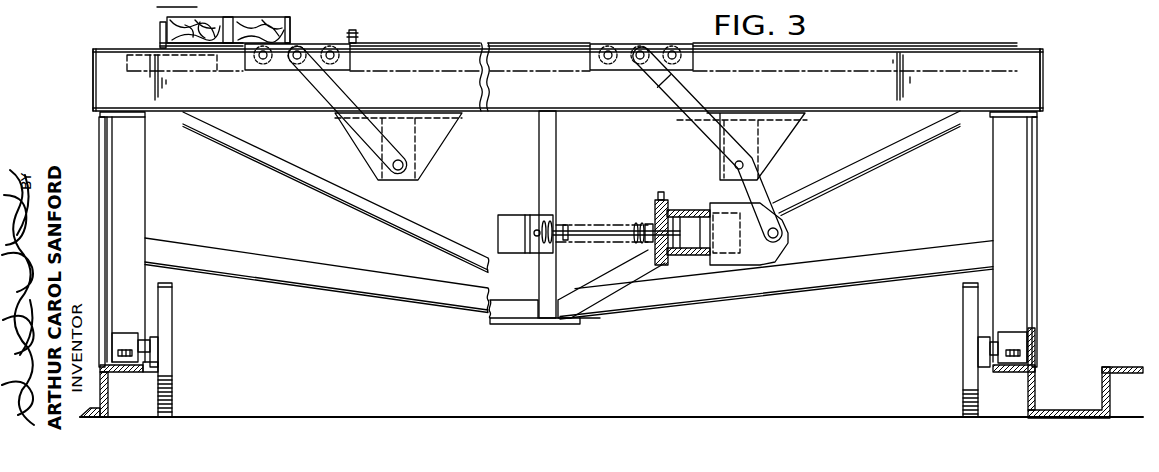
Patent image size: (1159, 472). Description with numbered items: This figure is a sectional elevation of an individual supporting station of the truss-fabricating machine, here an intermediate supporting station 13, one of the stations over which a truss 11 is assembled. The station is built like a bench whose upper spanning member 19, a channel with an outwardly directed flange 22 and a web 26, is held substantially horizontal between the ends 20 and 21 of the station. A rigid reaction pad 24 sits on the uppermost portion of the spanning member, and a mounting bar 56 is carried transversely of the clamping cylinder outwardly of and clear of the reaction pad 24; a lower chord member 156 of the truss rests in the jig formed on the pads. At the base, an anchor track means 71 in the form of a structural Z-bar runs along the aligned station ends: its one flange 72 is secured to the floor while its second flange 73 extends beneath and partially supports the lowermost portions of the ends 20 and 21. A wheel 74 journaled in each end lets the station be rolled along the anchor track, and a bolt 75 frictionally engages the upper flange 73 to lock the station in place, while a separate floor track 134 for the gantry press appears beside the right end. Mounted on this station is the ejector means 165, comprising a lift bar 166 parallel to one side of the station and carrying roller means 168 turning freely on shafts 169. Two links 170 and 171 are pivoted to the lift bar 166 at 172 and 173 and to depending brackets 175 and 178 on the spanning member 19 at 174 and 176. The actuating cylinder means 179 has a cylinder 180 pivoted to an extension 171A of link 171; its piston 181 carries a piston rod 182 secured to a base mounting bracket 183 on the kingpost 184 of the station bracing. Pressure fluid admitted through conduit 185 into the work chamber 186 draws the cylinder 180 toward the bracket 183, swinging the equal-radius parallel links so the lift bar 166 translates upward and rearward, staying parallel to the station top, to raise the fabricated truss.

The truss 11 is at (163, 12).
The intermediate supporting station 13 is at (1054, 80).
The upper spanning member 19 is at (143, 90).
The end of supporting station 20 is at (105, 177).
The end of supporting station 21 is at (1034, 236).
The flange 22 is at (93, 108).
The reaction pad 24 is at (173, 33).
The web 26 is at (1036, 97).
The mounting bar 56 is at (355, 57).
The anchor track means 71 is at (111, 397).
The flange 72 is at (90, 414).
The flange 73 is at (130, 378).
The wheel 74 is at (172, 340).
The bolt 75 is at (127, 352).
The track 134 is at (1127, 364).
The lower chord member 156 is at (195, 33).
The ejector means 165 is at (690, 295).
The lift bar 166 is at (592, 43).
The roller means 168 is at (670, 43).
The shaft 169 is at (680, 58).
The link 170 is at (347, 100).
The link 171 is at (680, 99).
The extension 171A is at (778, 203).
The pivotal attachment 172 is at (287, 68).
The pivotal attachment 173 is at (636, 66).
The pivotal attachment 174 is at (388, 181).
The mounting bracket 175 is at (433, 152).
The pivotal attachment 176 is at (734, 165).
The bracket 178 is at (790, 140).
The cylinder means 179 is at (724, 274).
The cylinder 180 is at (762, 266).
The piston 181 is at (686, 284).
The piston rod 182 is at (597, 238).
The base mounting bracket 183 is at (510, 213).
The kingpost 184 is at (540, 138).
The conduit 185 is at (664, 197).
The work chamber 186 is at (667, 265).